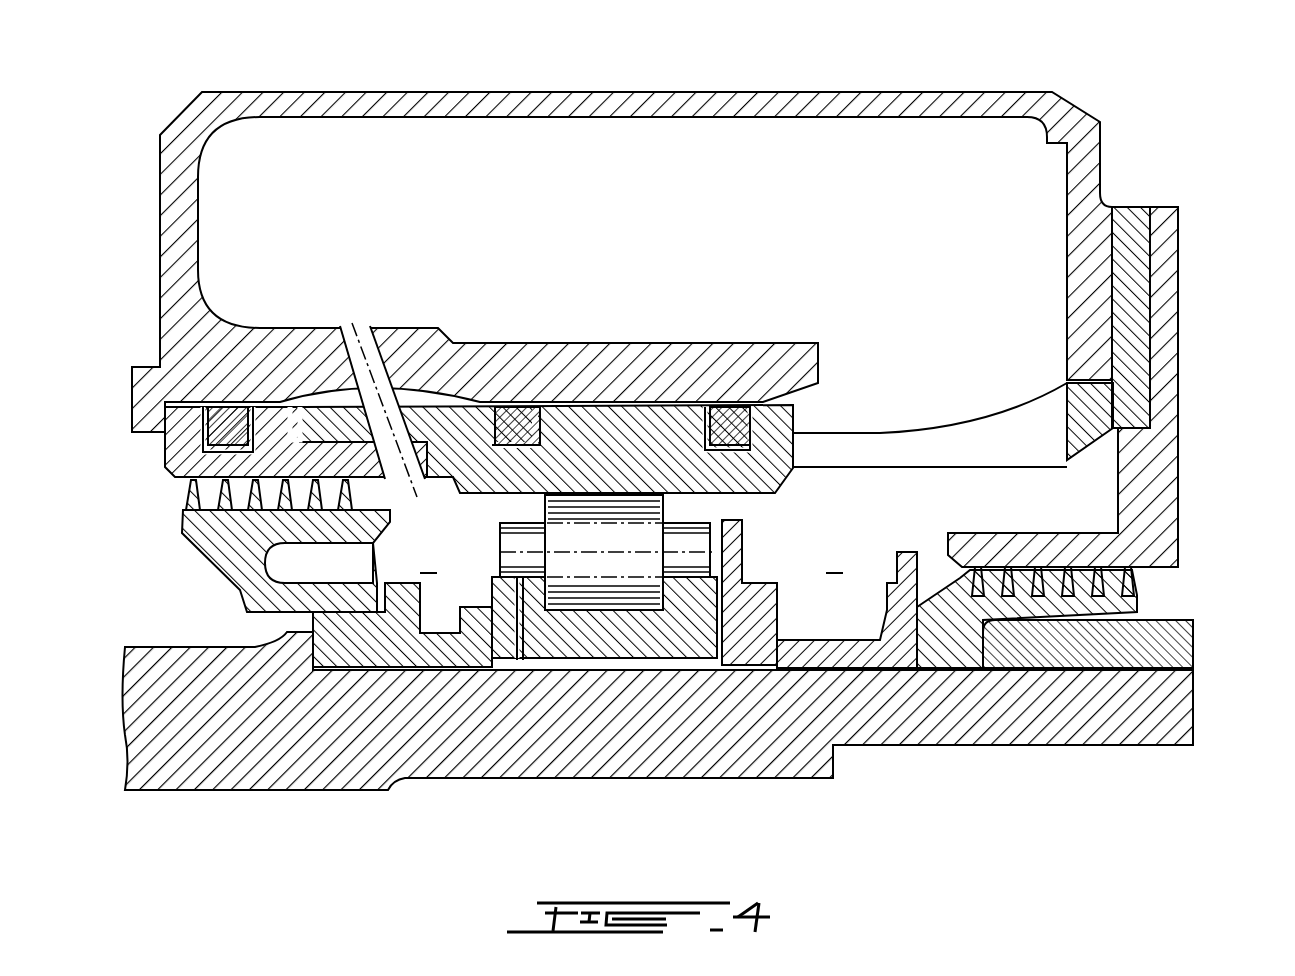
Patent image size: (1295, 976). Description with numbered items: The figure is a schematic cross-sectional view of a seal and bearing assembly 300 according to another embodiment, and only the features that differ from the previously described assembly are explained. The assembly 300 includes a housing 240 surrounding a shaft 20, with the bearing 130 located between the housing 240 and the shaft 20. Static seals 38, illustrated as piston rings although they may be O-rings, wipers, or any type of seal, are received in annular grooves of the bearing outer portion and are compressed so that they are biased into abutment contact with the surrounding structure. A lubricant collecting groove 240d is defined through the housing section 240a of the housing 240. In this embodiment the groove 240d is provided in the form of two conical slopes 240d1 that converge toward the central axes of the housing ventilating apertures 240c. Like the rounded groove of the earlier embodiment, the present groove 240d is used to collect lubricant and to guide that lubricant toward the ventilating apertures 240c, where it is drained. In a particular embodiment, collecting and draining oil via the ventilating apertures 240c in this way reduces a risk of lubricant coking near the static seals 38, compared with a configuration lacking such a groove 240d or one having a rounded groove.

The seal and bearing assembly 300 is at (1176, 66).
The housing 240 is at (655, 306).
The housing section 240a is at (735, 343).
The ventilating apertures 240c is at (400, 328).
The lubricant collecting groove 240d is at (436, 384).
The conical slopes 240d1 is at (320, 400).
The static seals 38 is at (517, 423).
The bearing 130 is at (613, 694).
The shaft 20 is at (996, 750).